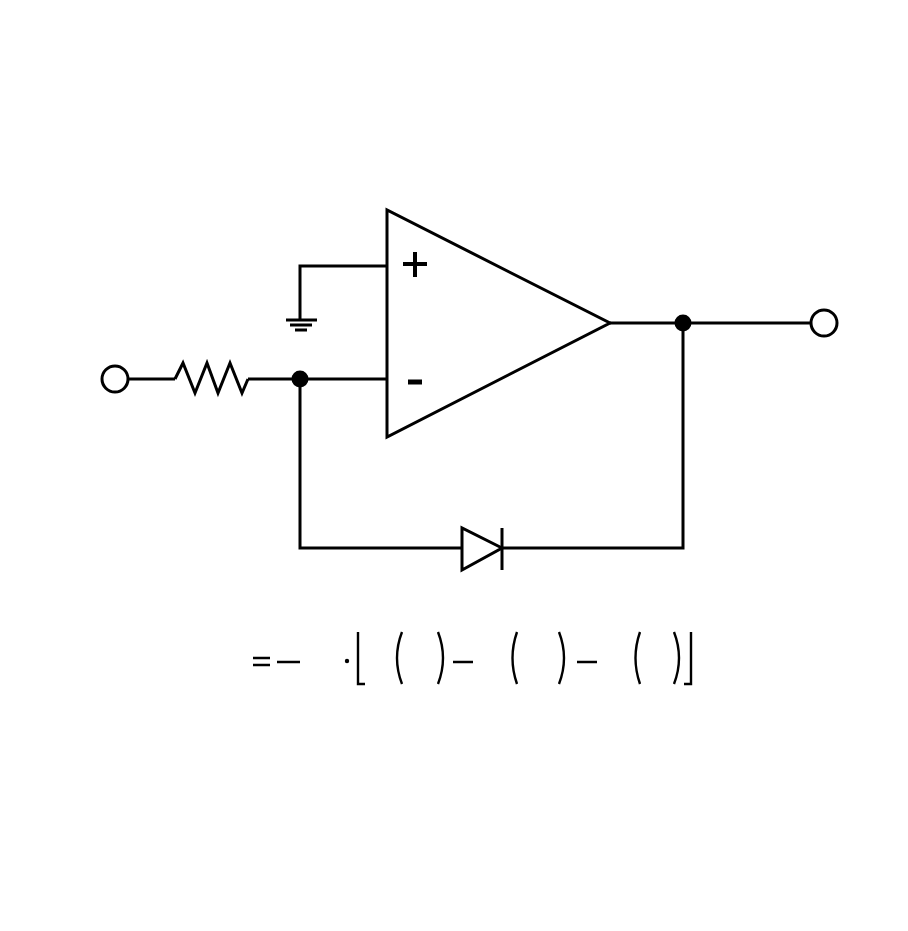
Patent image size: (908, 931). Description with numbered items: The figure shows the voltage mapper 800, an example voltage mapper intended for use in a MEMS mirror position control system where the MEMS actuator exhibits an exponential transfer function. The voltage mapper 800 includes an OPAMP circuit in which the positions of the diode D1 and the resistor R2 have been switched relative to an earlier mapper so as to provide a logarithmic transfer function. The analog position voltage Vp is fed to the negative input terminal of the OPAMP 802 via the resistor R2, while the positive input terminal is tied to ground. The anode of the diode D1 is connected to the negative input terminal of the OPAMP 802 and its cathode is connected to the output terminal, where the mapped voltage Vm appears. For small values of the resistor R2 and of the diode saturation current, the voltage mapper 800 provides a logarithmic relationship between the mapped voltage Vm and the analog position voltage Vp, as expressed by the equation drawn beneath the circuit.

The voltage mapper 800 is at (688, 95).
The OPAMP 802 is at (500, 266).
The resistor R2 is at (211, 363).
The diode D1 is at (482, 532).
The analog position voltage Vp is at (123, 376).
The mapped voltage Vm is at (844, 321).